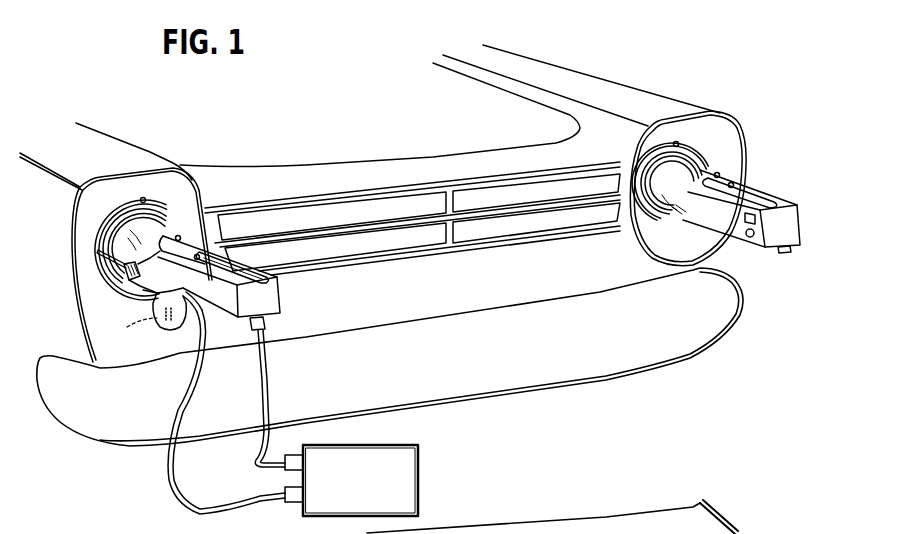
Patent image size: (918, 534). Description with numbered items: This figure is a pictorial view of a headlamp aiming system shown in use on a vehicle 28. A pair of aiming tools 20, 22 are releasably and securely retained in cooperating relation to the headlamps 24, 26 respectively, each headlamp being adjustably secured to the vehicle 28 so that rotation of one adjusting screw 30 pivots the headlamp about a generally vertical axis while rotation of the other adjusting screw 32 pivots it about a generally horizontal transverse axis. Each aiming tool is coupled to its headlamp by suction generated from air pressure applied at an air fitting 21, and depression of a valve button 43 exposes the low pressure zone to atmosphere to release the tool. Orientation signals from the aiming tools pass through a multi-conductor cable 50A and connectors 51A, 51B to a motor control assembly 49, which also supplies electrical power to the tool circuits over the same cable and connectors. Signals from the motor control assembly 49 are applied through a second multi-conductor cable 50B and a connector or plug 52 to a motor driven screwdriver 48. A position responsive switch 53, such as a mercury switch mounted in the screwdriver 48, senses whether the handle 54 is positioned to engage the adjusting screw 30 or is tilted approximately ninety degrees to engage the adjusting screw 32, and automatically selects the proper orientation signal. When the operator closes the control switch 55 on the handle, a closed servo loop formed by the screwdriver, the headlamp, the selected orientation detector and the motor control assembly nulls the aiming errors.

The aiming tool 20 is at (217, 280).
The air fitting 21 is at (199, 255).
The aiming tool 22 is at (755, 179).
The headlamp 24 is at (166, 203).
The headlamp 26 is at (679, 144).
The vehicle 28 is at (434, 146).
The adjusting screw 30 is at (97, 252).
The adjusting screw 32 is at (141, 198).
The valve button 43 is at (179, 236).
The motor driven screwdriver 48 is at (143, 290).
The motor control assembly 49 is at (418, 470).
The multi-conductor cable 50A is at (268, 390).
The multi-conductor cable 50B is at (172, 493).
The connector 51A is at (265, 330).
The connector 51B is at (285, 466).
The connector or plug 52 is at (285, 495).
The position responsive switch 53 is at (158, 326).
The handle 54 is at (186, 350).
The control switch 55 is at (151, 304).